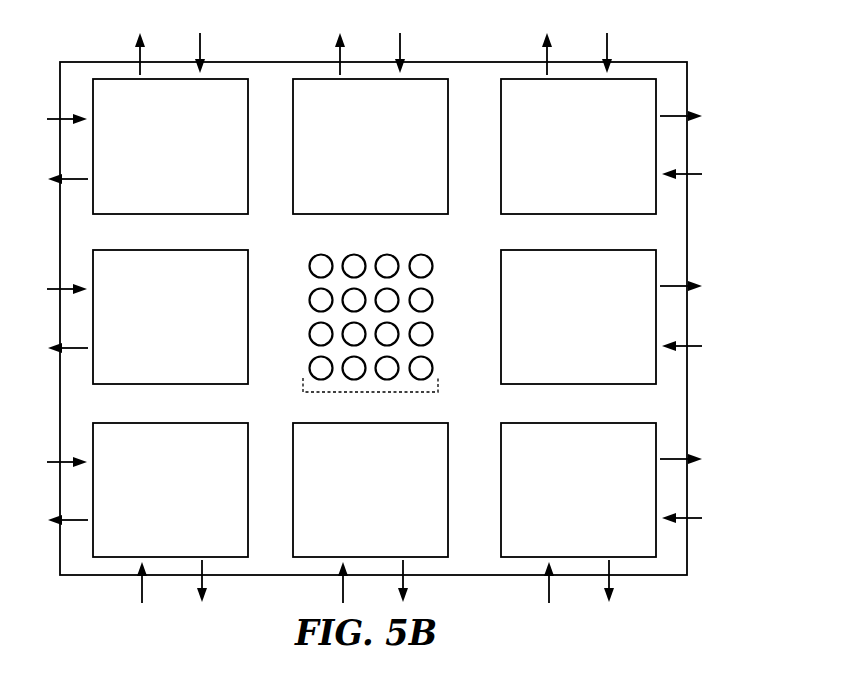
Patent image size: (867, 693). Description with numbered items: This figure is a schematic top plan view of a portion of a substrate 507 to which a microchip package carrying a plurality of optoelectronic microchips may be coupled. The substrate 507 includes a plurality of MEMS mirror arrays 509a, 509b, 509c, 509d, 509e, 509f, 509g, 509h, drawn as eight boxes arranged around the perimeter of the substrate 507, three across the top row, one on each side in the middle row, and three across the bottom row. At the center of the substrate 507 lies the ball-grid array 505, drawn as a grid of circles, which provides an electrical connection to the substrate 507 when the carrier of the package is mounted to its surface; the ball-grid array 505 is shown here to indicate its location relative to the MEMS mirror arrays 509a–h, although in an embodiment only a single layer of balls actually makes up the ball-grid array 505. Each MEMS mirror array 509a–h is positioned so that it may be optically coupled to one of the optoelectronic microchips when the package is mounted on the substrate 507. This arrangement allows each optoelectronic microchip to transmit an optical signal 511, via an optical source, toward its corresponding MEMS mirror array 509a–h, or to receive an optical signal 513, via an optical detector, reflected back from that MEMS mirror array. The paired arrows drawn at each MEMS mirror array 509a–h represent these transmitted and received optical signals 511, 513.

The ball-grid array 505 is at (313, 393).
The substrate 507 is at (687, 316).
The MEMS mirror array 509a is at (170, 146).
The MEMS mirror array 509b is at (370, 146).
The MEMS mirror array 509c is at (578, 146).
The MEMS mirror array 509d is at (578, 317).
The MEMS mirror array 509e is at (578, 490).
The MEMS mirror array 509f is at (370, 490).
The MEMS mirror array 509g is at (170, 490).
The MEMS mirror array 509h is at (170, 317).
The optical signal 511 is at (546, 48).
The optical signal 513 is at (608, 35).